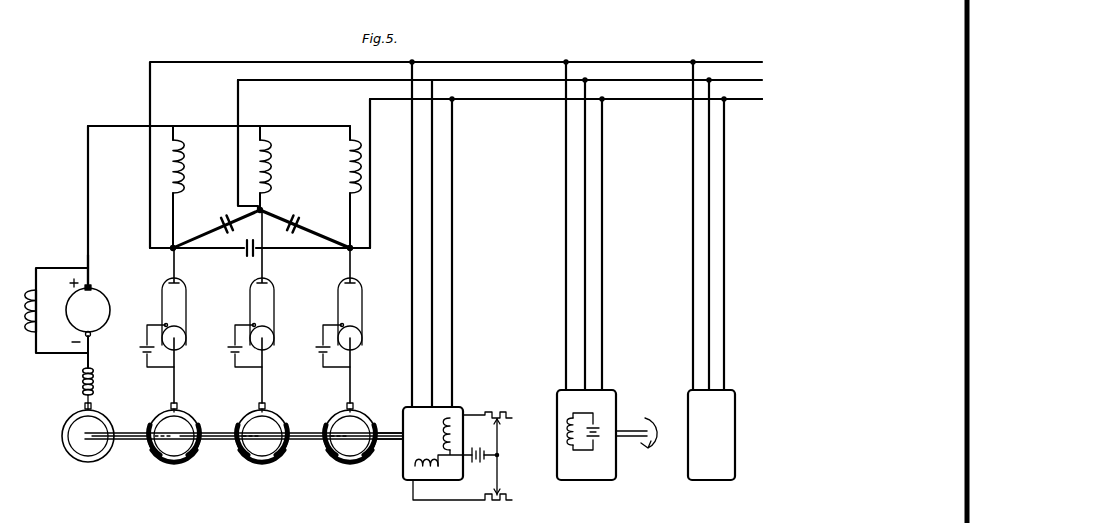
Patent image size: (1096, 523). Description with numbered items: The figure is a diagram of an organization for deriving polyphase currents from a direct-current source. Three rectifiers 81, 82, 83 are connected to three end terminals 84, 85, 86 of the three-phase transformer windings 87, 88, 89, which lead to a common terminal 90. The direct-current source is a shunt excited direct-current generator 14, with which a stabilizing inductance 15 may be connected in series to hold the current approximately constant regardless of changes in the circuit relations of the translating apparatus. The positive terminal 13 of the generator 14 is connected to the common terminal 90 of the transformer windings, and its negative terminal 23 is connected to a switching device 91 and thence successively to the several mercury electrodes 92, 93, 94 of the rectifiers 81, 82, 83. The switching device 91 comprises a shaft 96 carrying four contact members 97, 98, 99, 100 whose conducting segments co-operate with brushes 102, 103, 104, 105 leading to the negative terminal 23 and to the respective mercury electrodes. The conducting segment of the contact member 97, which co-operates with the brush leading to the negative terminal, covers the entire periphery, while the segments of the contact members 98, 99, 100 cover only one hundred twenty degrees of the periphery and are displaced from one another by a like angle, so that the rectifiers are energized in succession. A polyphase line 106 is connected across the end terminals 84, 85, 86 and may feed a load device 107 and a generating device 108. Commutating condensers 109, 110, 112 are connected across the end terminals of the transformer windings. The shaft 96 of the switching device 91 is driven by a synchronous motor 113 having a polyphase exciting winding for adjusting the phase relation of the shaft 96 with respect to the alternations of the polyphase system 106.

The positive terminal 13 is at (88, 268).
The direct-current generator 14 is at (97, 305).
The negative terminal 23 is at (88, 355).
The stabilizing inductance 15 is at (95, 383).
The brush 102 is at (84, 406).
The brush 103 is at (170, 406).
The brush 104 is at (258, 406).
The brush 105 is at (346, 406).
The contact member 97 is at (88, 452).
The contact member 98 is at (176, 452).
The contact member 99 is at (262, 452).
The contact member 100 is at (350, 452).
The shaft 96 is at (305, 442).
The switching device 91 is at (394, 423).
The rectifier 81 is at (187, 325).
The rectifier 82 is at (275, 306).
The rectifier 83 is at (363, 325).
The mercury electrode 92 is at (172, 348).
The mercury electrode 93 is at (260, 348).
The mercury electrode 94 is at (348, 348).
The end terminal 84 is at (170, 251).
The end terminal 85 is at (264, 216).
The end terminal 86 is at (353, 252).
The three-phase transformer winding 87 is at (182, 172).
The three-phase transformer winding 88 is at (268, 180).
The three-phase transformer winding 89 is at (345, 160).
The common terminal 90 is at (262, 126).
The commutating condenser 109 is at (247, 256).
The commutating condenser 110 is at (300, 222).
The commutating condenser 112 is at (220, 225).
The polyphase line 106 is at (500, 99).
The synchronous motor 113 is at (432, 420).
The load device 107 is at (609, 396).
The generating device 108 is at (728, 412).